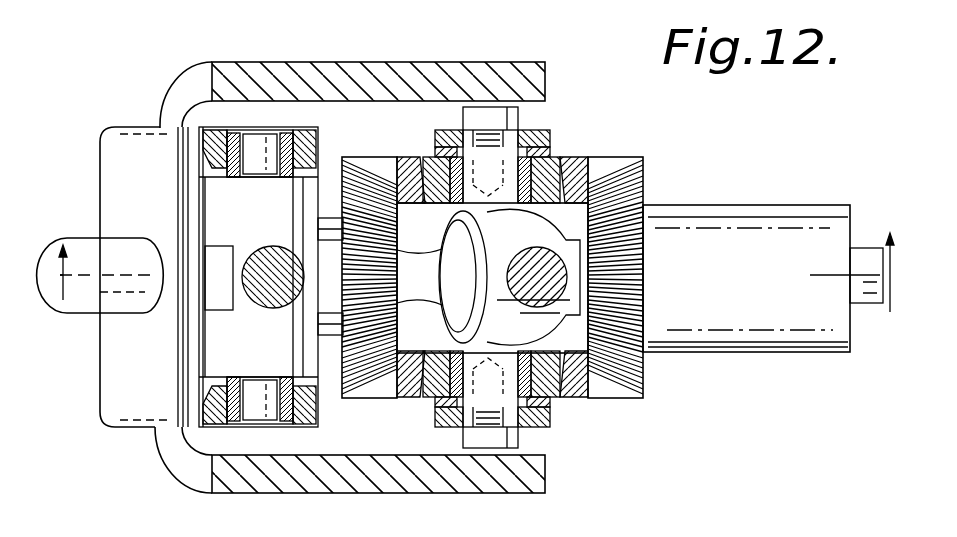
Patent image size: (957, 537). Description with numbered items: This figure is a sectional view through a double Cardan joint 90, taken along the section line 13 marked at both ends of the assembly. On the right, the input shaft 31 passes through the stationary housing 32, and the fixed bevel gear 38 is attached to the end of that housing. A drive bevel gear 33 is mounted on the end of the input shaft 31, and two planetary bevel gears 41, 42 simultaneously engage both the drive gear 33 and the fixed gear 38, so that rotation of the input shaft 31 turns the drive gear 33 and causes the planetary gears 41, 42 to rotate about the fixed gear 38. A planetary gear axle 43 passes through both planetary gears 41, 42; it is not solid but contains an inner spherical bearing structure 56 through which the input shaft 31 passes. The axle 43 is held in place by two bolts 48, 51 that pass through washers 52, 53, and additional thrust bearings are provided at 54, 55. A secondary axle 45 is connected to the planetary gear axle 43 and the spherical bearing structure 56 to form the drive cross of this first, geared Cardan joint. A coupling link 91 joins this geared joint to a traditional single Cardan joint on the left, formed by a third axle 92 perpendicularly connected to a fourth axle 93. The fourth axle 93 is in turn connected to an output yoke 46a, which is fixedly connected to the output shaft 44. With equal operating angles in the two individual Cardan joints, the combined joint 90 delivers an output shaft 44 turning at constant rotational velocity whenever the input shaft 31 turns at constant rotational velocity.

The section line 13- 13 is at (477, 290).
The input shaft 31 is at (863, 248).
The stationary housing 32 is at (763, 205).
The drive bevel gear 33 is at (343, 190).
The fixed bevel gear 38 is at (646, 182).
The planetary bevel gear 41 is at (583, 157).
The planetary bevel gear 42 is at (590, 400).
The planetary gear axle 43 is at (441, 340).
The output shaft 44 is at (118, 248).
The secondary axle 45 is at (549, 300).
The output yoke 46a is at (145, 430).
The bolt 48 is at (522, 118).
The bolt 51 is at (522, 432).
The washer 52 is at (437, 130).
The washer 53 is at (463, 440).
The thrust bearing 54 is at (443, 157).
The thrust bearing 55 is at (443, 402).
The spherical bearing structure 56 is at (538, 220).
The double Cardan joint 90 is at (524, 48).
The coupling link 91 is at (392, 62).
The third axle 92 is at (228, 290).
The fourth axle 93 is at (286, 362).